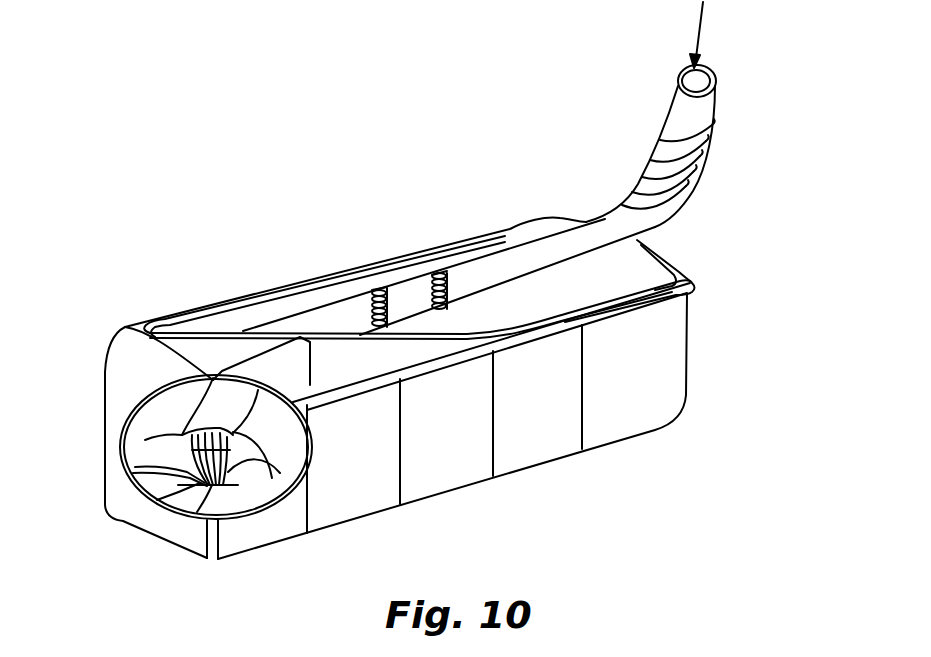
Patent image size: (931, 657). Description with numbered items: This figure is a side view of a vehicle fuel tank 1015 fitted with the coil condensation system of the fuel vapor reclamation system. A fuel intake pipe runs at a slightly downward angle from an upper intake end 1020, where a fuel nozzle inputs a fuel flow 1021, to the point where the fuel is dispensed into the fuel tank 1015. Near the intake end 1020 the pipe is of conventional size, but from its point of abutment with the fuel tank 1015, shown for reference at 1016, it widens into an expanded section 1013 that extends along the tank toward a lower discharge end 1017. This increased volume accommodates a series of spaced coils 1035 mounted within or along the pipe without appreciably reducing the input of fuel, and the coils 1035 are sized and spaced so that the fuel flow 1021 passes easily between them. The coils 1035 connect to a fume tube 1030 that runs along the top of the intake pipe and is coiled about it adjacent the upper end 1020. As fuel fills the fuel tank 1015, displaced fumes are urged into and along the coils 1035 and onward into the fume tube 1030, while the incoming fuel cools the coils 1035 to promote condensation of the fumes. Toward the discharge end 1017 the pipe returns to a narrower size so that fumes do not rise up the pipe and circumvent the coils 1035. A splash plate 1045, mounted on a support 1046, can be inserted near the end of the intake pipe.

The expanded section 1013 is at (545, 261).
The fuel tank 1015 is at (660, 363).
The point of abutment 1016 is at (623, 192).
The discharge end 1017 is at (197, 413).
The intake end 1020 is at (705, 83).
The fuel flow 1021 is at (700, 25).
The fume tube 1030 is at (590, 213).
The coils 1035 is at (447, 275).
The splash plate 1045 is at (230, 486).
The support 1046 is at (217, 488).